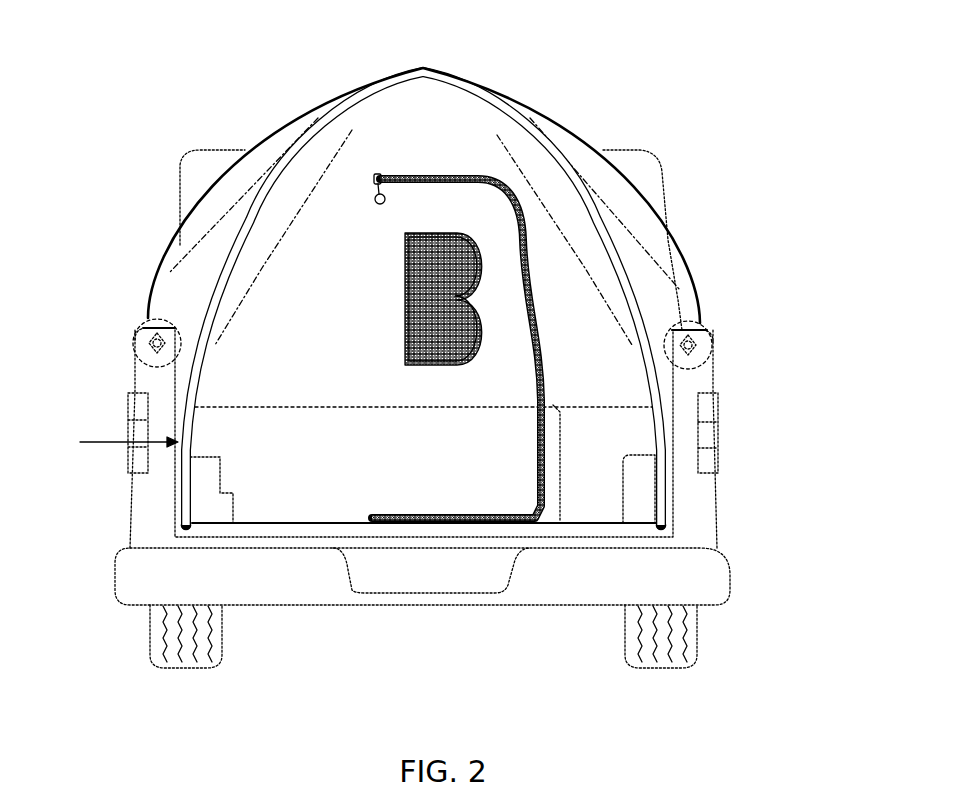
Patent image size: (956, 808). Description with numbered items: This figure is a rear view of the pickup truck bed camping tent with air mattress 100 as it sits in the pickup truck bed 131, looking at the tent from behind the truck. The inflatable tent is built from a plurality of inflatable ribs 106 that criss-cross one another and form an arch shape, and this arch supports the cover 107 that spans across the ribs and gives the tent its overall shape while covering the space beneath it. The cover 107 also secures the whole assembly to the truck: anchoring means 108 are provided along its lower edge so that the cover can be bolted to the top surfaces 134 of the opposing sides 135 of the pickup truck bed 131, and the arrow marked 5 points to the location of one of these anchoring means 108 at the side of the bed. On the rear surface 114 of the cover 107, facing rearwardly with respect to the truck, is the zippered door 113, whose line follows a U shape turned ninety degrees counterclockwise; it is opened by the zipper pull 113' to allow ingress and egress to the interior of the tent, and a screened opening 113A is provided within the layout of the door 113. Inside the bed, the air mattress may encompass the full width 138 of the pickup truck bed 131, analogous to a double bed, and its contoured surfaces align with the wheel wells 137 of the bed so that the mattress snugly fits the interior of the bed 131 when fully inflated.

The pickup truck bed camping tent with air mattress 100 is at (614, 103).
The inflatable ribs 106 is at (470, 90).
The cover 107 is at (503, 92).
The zippered door 113 is at (499, 296).
The screened opening 113A is at (473, 247).
The zipper pull 113' is at (310, 139).
The rear surface 114 is at (270, 312).
The detail view indicator 5 is at (146, 313).
The anchoring means 108 is at (131, 314).
The top surfaces 134 is at (698, 330).
The opposing sides 135 is at (135, 385).
The wheel wells 137 is at (643, 495).
The full width 138 is at (673, 442).
The pickup truck bed 131 is at (672, 552).